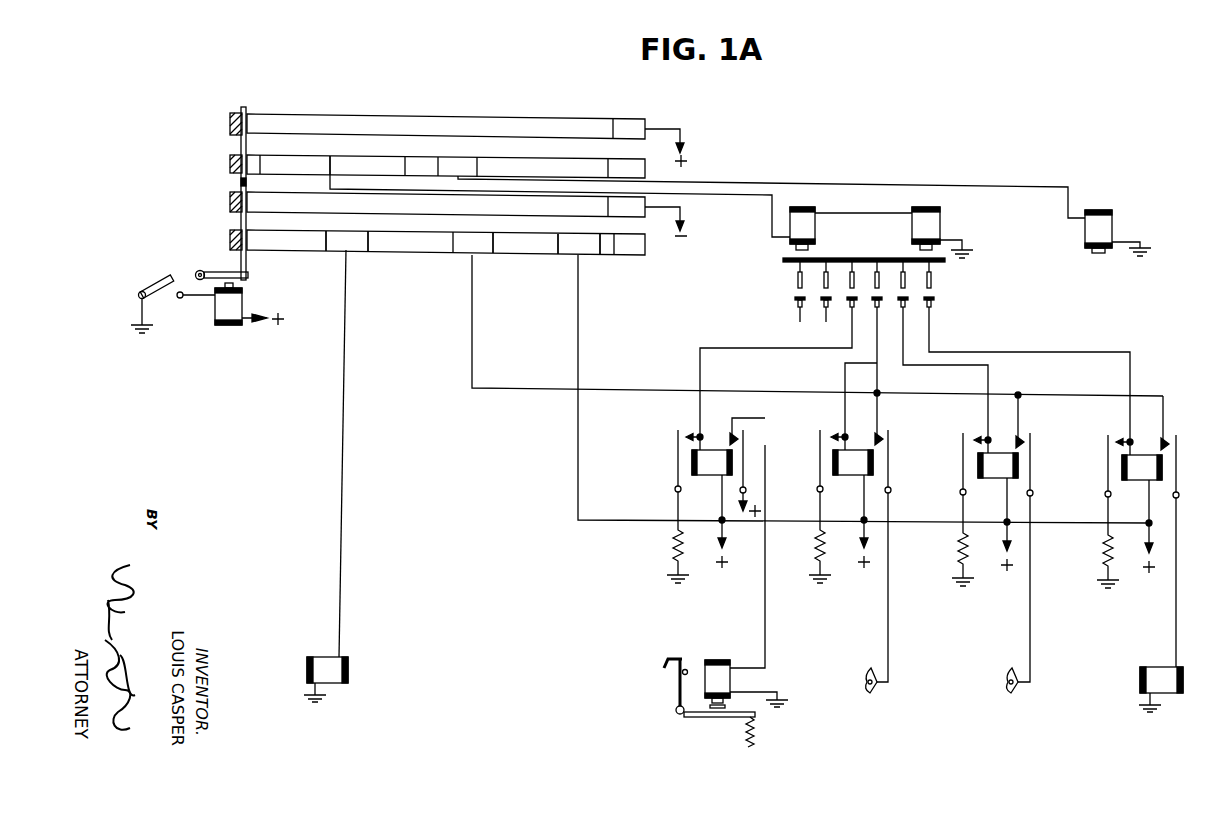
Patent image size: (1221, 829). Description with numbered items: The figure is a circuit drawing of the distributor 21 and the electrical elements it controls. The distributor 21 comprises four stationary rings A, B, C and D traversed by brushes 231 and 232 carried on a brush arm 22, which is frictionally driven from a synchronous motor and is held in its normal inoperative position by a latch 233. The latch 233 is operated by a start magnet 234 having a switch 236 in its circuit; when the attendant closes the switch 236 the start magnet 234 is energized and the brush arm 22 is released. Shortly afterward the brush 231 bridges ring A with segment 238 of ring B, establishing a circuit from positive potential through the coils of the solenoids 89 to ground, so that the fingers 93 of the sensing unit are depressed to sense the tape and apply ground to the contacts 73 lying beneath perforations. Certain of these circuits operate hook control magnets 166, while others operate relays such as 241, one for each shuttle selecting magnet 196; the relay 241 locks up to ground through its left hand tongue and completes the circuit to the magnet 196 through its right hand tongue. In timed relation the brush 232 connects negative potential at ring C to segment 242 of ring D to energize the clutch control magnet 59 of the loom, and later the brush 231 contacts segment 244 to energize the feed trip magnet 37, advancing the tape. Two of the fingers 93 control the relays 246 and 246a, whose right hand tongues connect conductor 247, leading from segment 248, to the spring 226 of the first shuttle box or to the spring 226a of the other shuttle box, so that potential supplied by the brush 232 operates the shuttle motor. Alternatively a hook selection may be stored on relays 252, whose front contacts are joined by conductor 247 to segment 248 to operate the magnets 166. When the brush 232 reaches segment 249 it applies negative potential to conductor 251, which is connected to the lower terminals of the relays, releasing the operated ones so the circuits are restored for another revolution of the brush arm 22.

The distributor 21 is at (352, 110).
The brush arm 22 is at (259, 181).
The brush 231 is at (230, 165).
The brush 232 is at (230, 243).
The latch 233 is at (252, 276).
The start magnet 234 is at (221, 310).
The switch 236 is at (155, 284).
The segment 238 is at (329, 165).
The segment 244 is at (470, 166).
The segment 242 is at (352, 248).
The segment 248 is at (470, 244).
The segment 249 is at (581, 244).
The conductor 247 is at (473, 309).
The conductor 251 is at (578, 349).
The solenoids 89 is at (812, 225).
The fingers 93 is at (797, 279).
The contacts 73 is at (797, 302).
The feed trip magnet 37 is at (1103, 222).
The relay 241 is at (718, 476).
The relay 246a is at (833, 461).
The relay 246 is at (1003, 479).
The relay 252 is at (1146, 481).
The shuttle selecting magnet 196 is at (718, 670).
The spring 226a is at (868, 691).
The spring 226 is at (1008, 691).
The hook control magnet 166 is at (1170, 685).
The clutch control magnet 59 is at (323, 668).